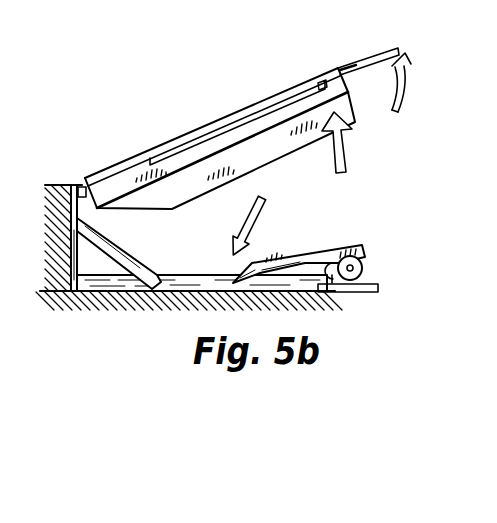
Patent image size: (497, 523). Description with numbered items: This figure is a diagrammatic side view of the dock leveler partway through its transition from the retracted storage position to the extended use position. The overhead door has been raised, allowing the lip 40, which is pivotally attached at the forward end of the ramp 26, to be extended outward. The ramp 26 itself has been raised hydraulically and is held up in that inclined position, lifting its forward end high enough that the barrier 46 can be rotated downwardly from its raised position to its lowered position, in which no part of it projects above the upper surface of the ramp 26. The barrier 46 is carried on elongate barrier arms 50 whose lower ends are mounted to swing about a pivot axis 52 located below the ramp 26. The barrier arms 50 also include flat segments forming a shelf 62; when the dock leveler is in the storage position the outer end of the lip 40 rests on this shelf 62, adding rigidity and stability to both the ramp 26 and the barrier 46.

The ramp 26 is at (145, 154).
The lip 40 is at (355, 65).
The barrier 46 is at (301, 233).
The barrier arms 50 is at (355, 243).
The pivot axis 52 is at (362, 266).
The shelf 62 is at (330, 288).